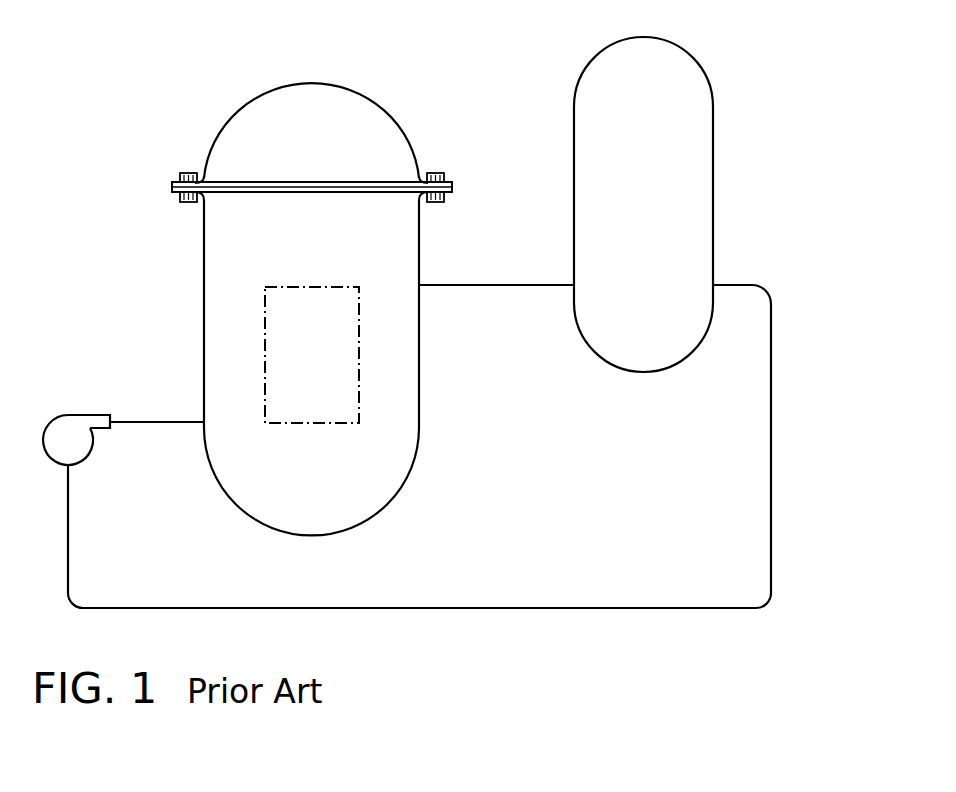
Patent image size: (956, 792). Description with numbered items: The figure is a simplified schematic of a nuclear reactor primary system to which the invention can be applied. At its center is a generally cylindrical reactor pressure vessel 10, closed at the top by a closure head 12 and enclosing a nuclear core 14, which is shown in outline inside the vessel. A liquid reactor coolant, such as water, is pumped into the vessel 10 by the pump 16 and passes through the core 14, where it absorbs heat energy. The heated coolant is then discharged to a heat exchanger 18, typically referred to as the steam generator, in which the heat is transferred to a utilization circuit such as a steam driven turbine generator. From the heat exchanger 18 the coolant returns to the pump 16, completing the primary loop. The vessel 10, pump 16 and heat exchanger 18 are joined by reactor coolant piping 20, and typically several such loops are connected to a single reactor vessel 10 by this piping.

The reactor pressure vessel 10 is at (423, 383).
The closure head 12 is at (217, 128).
The nuclear core 14 is at (265, 342).
The pump 16 is at (62, 413).
The heat exchanger 18 is at (713, 142).
The reactor coolant piping 20 is at (772, 538).